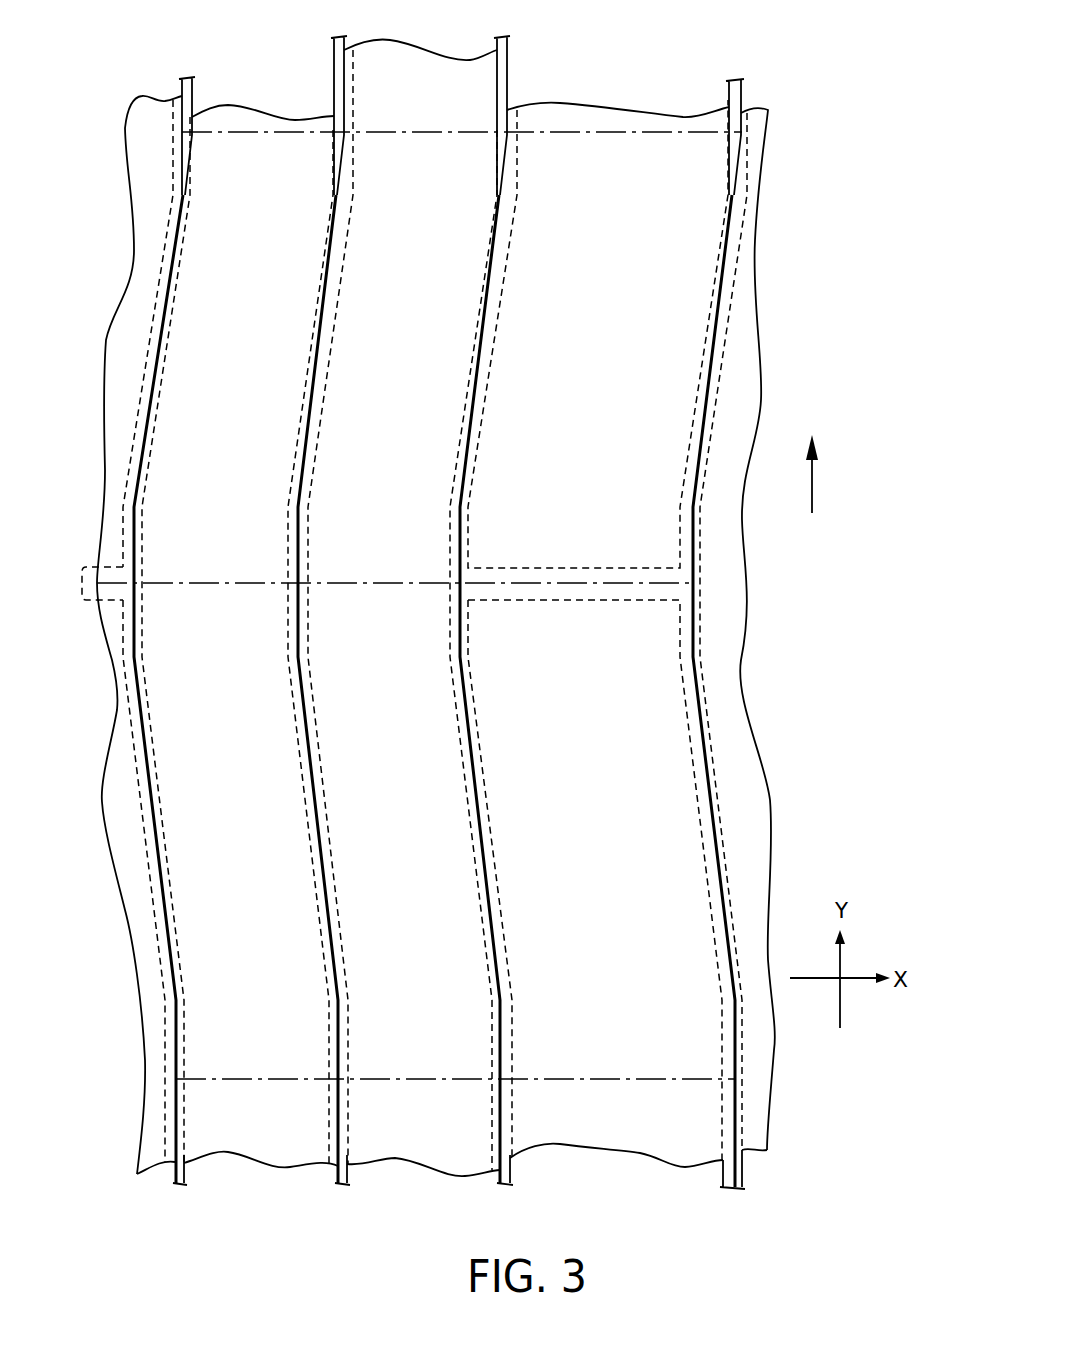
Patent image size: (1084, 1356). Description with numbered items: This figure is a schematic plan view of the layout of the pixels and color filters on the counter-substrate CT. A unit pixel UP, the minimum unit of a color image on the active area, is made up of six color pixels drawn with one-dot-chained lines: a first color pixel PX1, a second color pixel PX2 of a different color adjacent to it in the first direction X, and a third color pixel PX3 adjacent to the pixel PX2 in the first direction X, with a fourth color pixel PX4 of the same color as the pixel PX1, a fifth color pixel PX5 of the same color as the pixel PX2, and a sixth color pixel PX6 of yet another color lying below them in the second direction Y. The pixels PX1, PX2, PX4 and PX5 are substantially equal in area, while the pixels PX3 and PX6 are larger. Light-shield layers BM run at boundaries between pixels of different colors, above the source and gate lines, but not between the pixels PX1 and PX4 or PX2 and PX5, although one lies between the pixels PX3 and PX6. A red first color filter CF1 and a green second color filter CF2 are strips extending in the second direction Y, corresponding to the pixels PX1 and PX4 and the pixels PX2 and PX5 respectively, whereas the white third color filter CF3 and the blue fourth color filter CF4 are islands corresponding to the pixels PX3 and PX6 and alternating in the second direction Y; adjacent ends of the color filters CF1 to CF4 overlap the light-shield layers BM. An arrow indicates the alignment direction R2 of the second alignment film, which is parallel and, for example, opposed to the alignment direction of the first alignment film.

The light-shield layer BM is at (180, 78).
The first color filter CF1 is at (253, 124).
The second color filter CF2 is at (428, 66).
The third color filter CF3 is at (717, 352).
The fourth color filter CF4 is at (706, 750).
The unit pixel UP is at (721, 126).
The counter-substrate CT is at (814, 229).
The alignment direction of the second alignment film R2 is at (815, 472).
The first color pixel PX1 is at (232, 388).
The second color pixel PX2 is at (396, 388).
The third color pixel PX3 is at (599, 388).
The fourth color pixel PX4 is at (232, 838).
The fifth color pixel PX5 is at (394, 838).
The sixth color pixel PX6 is at (599, 838).